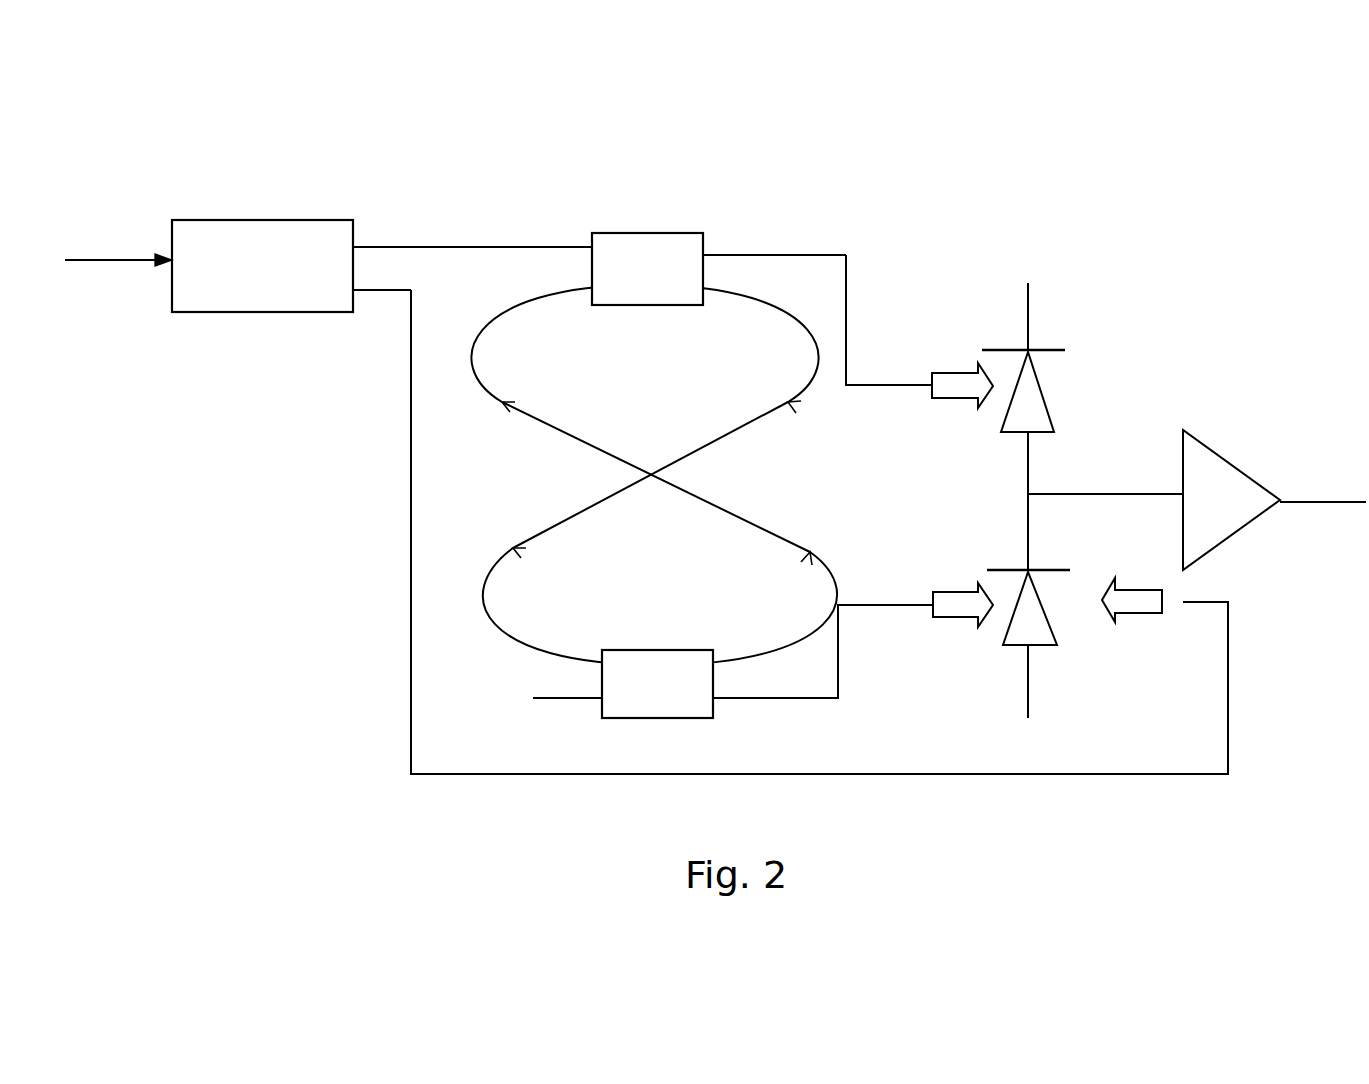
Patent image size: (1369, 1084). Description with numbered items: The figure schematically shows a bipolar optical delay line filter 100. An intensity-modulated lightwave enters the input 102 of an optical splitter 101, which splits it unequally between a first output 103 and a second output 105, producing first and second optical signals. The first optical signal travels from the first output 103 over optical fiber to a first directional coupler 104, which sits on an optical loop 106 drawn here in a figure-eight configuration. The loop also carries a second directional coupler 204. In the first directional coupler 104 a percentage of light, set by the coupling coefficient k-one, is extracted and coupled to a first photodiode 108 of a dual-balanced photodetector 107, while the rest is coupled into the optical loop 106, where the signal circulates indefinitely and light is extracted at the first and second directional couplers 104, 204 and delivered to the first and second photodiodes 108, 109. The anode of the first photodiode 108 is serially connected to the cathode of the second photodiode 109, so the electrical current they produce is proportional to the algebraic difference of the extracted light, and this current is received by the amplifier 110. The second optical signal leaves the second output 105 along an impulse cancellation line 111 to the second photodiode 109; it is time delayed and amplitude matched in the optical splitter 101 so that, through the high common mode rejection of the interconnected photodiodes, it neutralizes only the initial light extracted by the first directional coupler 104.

The optical delay line filter 100 is at (951, 153).
The optical splitter 101 is at (267, 220).
The input 102 is at (162, 248).
The first output 103 is at (367, 247).
The first directional coupler 104 is at (627, 232).
The second output 105 is at (380, 292).
The optical loop 106 is at (732, 435).
The dual-balanced photodetector 107 is at (998, 483).
The first photodiode 108 is at (1045, 403).
The second photodiode 109 is at (1052, 632).
The amplifier 110 is at (1210, 448).
The impulse cancellation line 111 is at (412, 590).
The second directional coupler 204 is at (655, 722).